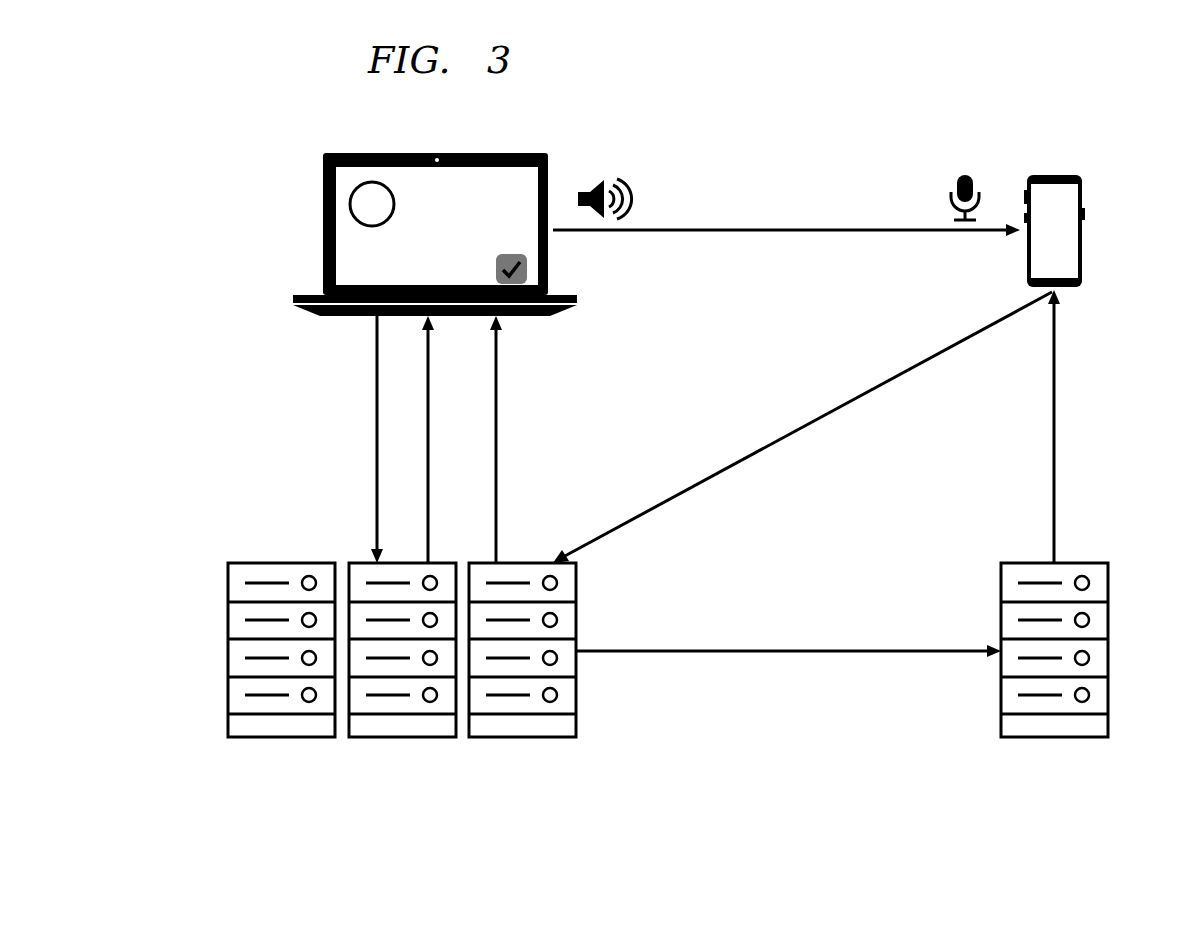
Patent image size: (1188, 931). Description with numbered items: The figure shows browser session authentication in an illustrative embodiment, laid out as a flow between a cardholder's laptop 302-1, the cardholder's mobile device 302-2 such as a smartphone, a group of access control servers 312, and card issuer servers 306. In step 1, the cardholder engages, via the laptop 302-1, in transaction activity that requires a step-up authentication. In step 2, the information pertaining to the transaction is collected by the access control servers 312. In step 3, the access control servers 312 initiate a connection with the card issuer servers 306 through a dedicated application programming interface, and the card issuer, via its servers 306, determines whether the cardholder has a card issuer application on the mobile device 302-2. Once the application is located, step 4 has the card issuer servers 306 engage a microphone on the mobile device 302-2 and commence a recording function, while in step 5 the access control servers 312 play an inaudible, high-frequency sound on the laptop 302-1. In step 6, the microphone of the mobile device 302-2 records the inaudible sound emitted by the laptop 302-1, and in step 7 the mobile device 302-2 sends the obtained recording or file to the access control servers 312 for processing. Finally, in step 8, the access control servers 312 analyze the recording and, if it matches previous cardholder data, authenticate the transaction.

The cardholder's laptop 302-1 is at (402, 219).
The cardholder's mobile device 302-2 is at (1083, 232).
The access control servers 312 is at (227, 583).
The card issuer servers 306 is at (1110, 583).
The step 1 is at (372, 204).
The step 2 is at (353, 439).
The step 3 is at (789, 627).
The step 4 is at (1077, 426).
The step 5 is at (451, 439).
The step 6 is at (786, 206).
The step 7 is at (802, 427).
The step 8 is at (519, 439).